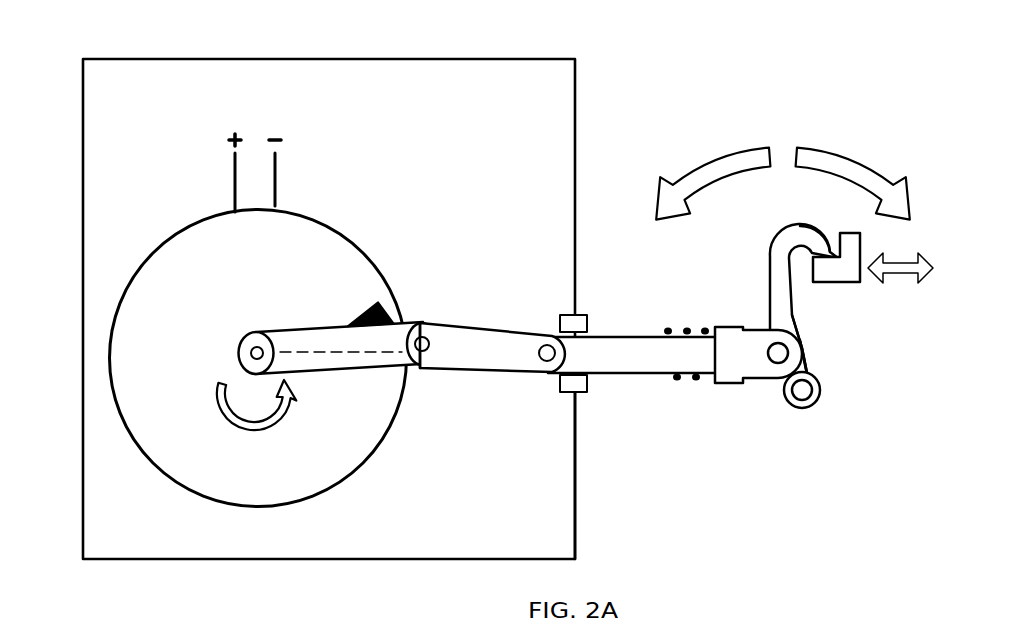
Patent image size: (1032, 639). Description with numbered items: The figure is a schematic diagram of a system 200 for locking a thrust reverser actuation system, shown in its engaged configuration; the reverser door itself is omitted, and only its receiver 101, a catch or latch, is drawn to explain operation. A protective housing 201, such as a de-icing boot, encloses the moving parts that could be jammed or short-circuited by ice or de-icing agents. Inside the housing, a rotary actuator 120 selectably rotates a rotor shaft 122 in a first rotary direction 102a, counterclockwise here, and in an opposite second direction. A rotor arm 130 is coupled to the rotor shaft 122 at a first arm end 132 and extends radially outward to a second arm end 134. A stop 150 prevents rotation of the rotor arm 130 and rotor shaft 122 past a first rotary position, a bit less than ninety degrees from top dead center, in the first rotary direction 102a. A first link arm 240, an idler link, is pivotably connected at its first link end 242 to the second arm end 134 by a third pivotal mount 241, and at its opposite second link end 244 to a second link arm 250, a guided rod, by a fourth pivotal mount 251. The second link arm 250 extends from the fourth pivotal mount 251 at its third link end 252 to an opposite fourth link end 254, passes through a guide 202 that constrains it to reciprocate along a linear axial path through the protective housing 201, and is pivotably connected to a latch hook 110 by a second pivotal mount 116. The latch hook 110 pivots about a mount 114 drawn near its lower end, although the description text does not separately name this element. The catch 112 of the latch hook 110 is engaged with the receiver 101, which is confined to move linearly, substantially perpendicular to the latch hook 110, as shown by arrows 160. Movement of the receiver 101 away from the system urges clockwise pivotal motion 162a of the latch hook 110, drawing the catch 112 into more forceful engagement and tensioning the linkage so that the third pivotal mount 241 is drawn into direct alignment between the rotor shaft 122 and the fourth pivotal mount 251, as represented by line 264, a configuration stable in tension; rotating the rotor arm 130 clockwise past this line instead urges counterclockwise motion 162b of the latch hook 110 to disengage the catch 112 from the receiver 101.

The system 200 is at (94, 44).
The protective housing 201 is at (82, 113).
The rotary actuator 120 is at (160, 242).
The rotor arm 130 is at (316, 328).
The rotor shaft 122 is at (247, 347).
The first arm end 132 is at (240, 322).
The stop 150 is at (362, 313).
The first rotary direction 102a is at (223, 403).
The second arm end 134 is at (438, 311).
The third pivotal mount 241 is at (423, 323).
The first link end 242 is at (432, 382).
The second link end 244 is at (535, 390).
The first link arm 240 is at (486, 368).
The line 264 is at (488, 352).
The third link end 252 is at (548, 320).
The fourth pivotal mount 251 is at (573, 380).
The guide 202 is at (584, 314).
The second link arm 250 is at (638, 369).
The latch hook 110 is at (769, 256).
The catch 112 is at (810, 228).
The second pivotal mount 116 is at (771, 347).
The pivot 114 is at (816, 403).
The fourth link end 254 is at (816, 356).
The receiver 101 is at (861, 242).
The arrows 160 is at (900, 283).
The clockwise pivotal motion 162a is at (877, 170).
The counterclockwise motion 162b is at (717, 168).